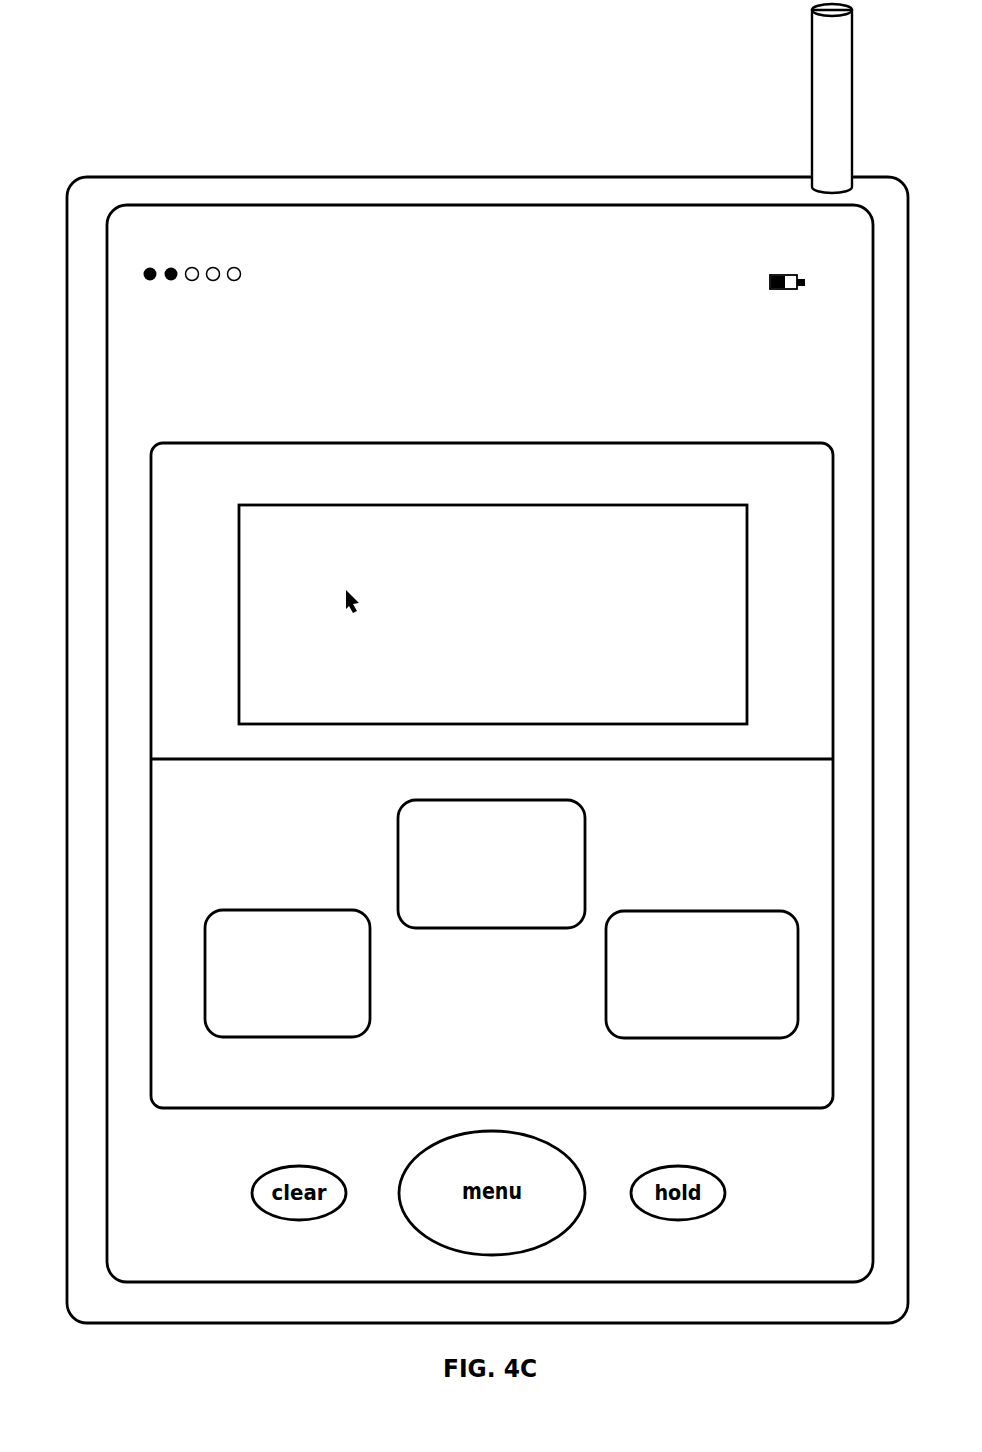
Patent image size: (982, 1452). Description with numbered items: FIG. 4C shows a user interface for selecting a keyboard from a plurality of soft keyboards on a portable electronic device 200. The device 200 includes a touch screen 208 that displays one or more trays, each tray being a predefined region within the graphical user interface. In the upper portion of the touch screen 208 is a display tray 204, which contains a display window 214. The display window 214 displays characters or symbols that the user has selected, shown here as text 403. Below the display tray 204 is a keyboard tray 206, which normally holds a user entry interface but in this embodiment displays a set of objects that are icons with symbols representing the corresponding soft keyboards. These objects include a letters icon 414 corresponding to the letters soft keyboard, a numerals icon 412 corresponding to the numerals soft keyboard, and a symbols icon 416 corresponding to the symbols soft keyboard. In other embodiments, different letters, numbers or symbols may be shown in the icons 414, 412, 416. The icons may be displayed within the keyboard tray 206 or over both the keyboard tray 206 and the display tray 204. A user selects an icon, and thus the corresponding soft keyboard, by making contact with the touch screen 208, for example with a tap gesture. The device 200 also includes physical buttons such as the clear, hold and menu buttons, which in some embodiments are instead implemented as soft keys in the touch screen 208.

The portable electronic device 200 is at (734, 128).
The touch screen 208 is at (770, 415).
The display tray 204 is at (767, 489).
The display window 214 is at (700, 716).
The text 403 is at (352, 608).
The keyboard tray 206 is at (758, 799).
The icon "1 2 3" 412 is at (300, 909).
The icon "A B C" 414 is at (518, 929).
The icon "! @ #" 416 is at (715, 909).